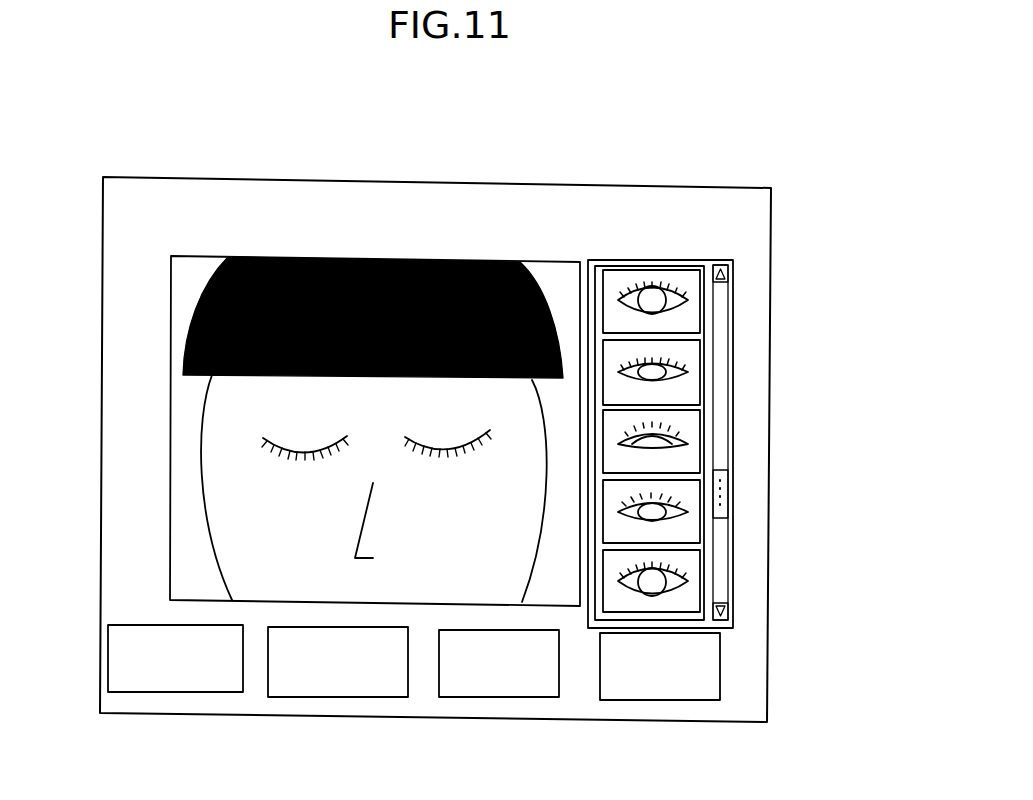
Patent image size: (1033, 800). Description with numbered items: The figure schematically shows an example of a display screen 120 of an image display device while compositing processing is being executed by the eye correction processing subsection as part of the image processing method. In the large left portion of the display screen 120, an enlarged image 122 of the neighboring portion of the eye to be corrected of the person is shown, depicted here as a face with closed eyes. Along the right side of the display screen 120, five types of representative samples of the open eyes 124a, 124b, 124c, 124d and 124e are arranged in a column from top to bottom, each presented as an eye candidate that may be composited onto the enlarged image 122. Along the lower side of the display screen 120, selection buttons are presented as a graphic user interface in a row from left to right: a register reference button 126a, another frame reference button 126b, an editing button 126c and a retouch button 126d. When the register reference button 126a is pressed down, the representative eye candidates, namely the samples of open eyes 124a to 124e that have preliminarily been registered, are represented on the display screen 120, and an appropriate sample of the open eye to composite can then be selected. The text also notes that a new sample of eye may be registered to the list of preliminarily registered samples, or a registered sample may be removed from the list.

The display screen 120 is at (612, 131).
The enlarged image 122 is at (212, 452).
The sample of the open eye 124a is at (685, 322).
The sample of the open eye 124b is at (685, 388).
The sample of the open eye 124c is at (683, 452).
The sample of the open eye 124d is at (683, 518).
The sample of the open eye 124e is at (683, 583).
The register reference button 126a is at (188, 693).
The another frame reference button 126b is at (363, 697).
The editing button 126c is at (522, 697).
The retouch button 126d is at (680, 700).